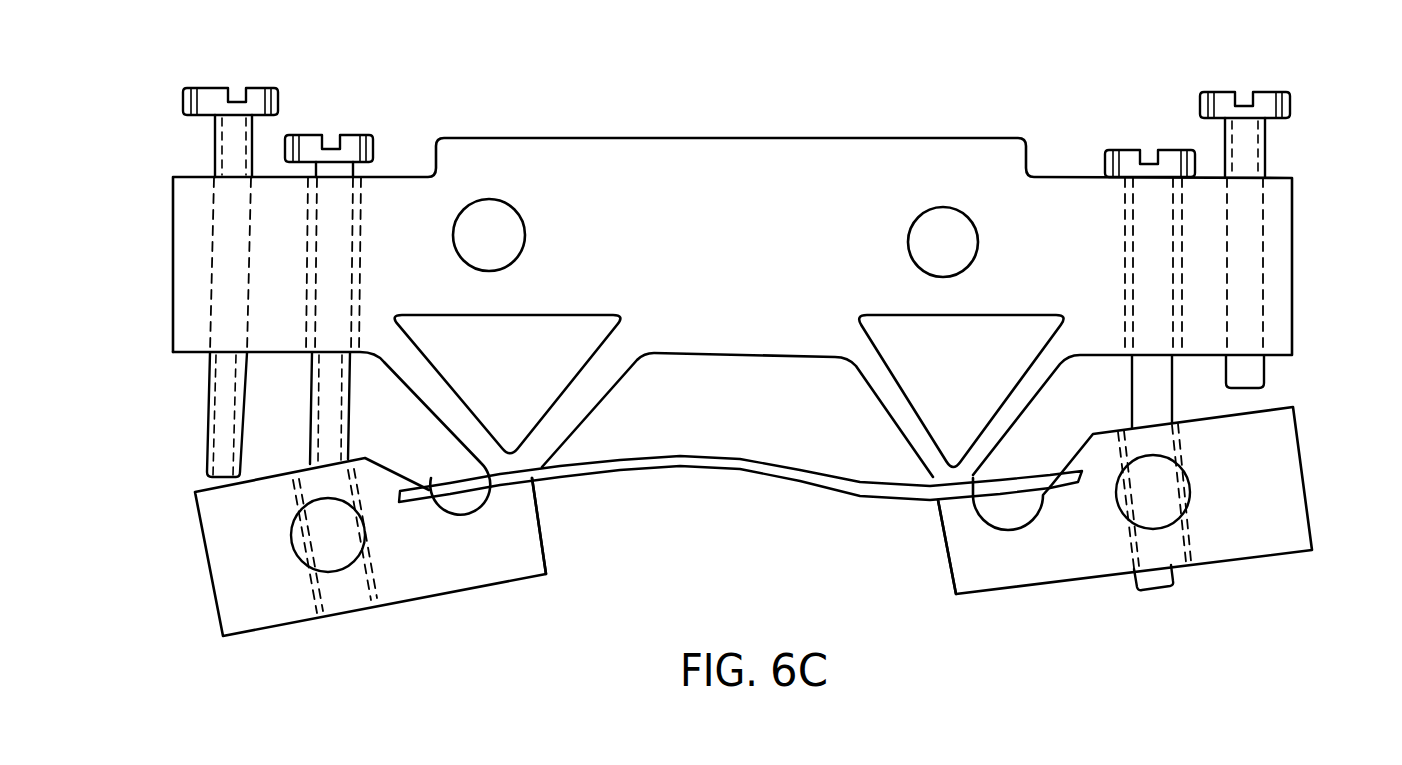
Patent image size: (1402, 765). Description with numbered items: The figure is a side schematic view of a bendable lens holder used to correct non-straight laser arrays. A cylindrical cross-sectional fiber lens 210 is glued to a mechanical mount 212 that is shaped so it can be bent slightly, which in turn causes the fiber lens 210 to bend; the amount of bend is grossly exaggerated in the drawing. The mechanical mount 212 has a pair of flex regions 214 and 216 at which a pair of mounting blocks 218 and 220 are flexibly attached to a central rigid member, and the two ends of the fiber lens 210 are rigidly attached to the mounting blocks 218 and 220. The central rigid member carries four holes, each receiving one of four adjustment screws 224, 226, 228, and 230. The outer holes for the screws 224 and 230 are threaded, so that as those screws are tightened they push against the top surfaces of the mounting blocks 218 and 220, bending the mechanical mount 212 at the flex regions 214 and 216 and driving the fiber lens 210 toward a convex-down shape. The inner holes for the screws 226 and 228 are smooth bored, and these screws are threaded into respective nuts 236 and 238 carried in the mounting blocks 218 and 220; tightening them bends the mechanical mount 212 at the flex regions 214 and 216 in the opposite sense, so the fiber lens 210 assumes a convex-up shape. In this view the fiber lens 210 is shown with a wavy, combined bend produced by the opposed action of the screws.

The fiber lens 210 is at (740, 470).
The mechanical mount 212 is at (765, 152).
The flex region 214 is at (520, 502).
The flex region 216 is at (950, 508).
The mounting block 218 is at (228, 585).
The mounting block 220 is at (1283, 458).
The adjustment screw 224 is at (268, 88).
The adjustment screw 226 is at (362, 135).
The adjustment screw 228 is at (1122, 150).
The adjustment screw 230 is at (1207, 92).
The nut 236 is at (365, 533).
The nut 238 is at (1190, 497).